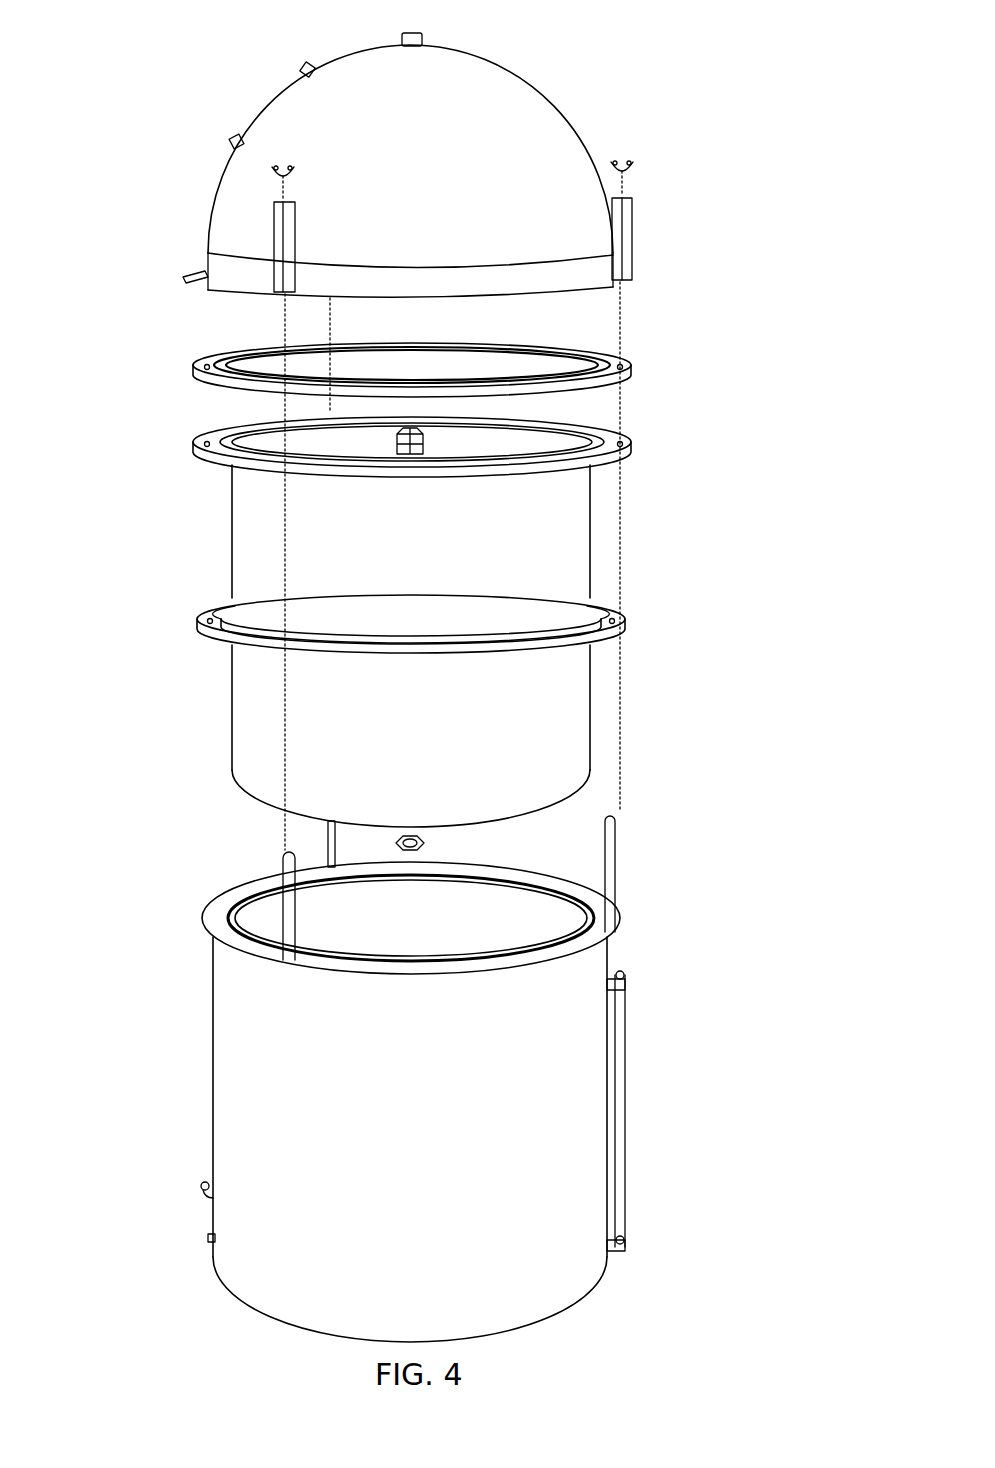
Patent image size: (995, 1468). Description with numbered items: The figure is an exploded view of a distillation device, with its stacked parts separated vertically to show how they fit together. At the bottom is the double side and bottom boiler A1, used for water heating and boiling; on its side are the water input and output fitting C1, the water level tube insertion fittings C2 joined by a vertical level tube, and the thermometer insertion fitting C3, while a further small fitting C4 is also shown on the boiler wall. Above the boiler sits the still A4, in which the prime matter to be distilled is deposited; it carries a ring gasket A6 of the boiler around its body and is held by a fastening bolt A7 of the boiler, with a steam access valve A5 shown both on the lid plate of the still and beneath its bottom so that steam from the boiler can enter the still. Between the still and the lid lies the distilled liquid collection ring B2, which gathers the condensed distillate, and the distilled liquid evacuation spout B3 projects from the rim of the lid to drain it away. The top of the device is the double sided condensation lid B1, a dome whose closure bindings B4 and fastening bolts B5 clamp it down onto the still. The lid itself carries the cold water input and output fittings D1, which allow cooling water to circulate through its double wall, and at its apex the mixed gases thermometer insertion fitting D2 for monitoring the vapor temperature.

The double side and bottom boiler A1 is at (287, 1093).
The still A4 is at (383, 700).
The steam access valve A5 is at (396, 437).
The ring gasket of the boiler A6 is at (217, 620).
The fastening bolt of the boiler A7 is at (290, 912).
The double sided condensation lid B1 is at (370, 202).
The distilled liquid collection ring B2 is at (200, 368).
The distilled liquid evacuation spout B3 is at (185, 278).
The condensation lid closure bindings B4 is at (634, 243).
The condensation lid fastening bolts B5 is at (634, 172).
The water input and output fitting of the boiler C1 is at (210, 1222).
The water level tube insertion fittings of the boiler C2 is at (626, 1250).
The thermometer insertion fitting of the boiler C3 is at (626, 973).
The side fitting C4 is at (202, 1185).
The condensation lid cold water input and output fittings D1 is at (304, 72).
The mixed gases thermometer insertion fitting D2 is at (403, 38).